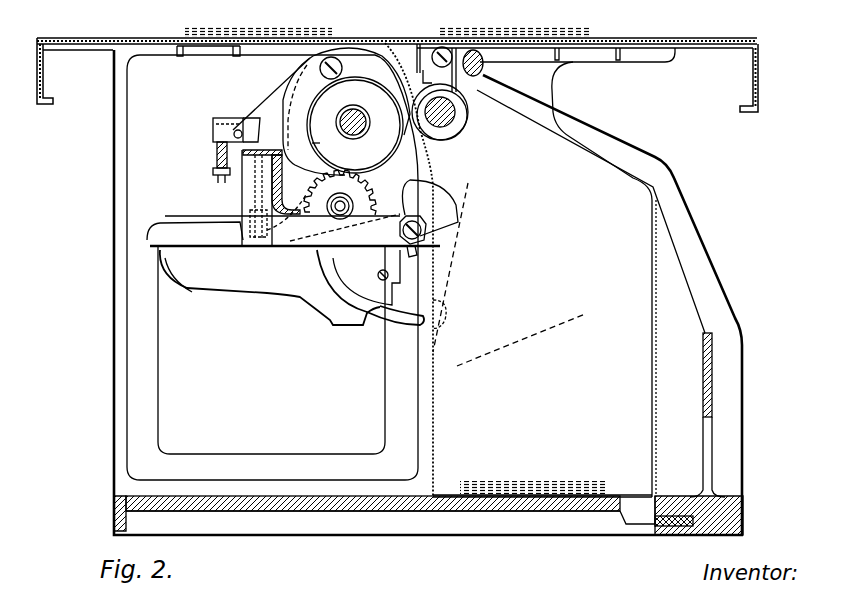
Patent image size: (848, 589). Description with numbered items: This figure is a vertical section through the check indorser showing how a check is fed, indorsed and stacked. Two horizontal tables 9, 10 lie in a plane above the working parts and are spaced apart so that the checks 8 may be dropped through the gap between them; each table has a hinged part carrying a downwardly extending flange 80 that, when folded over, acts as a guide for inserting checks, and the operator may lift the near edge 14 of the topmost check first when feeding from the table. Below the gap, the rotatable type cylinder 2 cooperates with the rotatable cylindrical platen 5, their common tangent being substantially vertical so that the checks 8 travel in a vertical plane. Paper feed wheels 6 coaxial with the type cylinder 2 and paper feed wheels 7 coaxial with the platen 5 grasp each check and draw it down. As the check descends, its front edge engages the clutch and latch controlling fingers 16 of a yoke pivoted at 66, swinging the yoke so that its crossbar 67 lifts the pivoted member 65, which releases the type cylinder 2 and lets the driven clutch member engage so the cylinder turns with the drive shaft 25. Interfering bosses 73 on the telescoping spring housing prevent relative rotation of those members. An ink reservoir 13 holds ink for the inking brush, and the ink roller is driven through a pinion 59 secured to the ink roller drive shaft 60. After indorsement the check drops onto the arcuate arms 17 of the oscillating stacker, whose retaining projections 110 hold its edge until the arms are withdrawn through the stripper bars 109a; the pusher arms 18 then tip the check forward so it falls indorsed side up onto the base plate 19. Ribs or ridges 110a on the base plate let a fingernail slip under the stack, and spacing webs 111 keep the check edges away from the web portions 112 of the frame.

The type cylinder 2 is at (307, 168).
The cylindrical platen 5 is at (466, 128).
The paper feed wheels 6 is at (388, 95).
The paper feed wheels 7 is at (470, 114).
The checks 8 is at (237, 27).
The table 9 is at (82, 38).
The table 10 is at (650, 44).
The reservoir 13 is at (267, 283).
The near edge 14 is at (187, 13).
The clutch and latch controlling fingers 16 is at (355, 125).
The arcuate arms 17 is at (378, 327).
The pusher arms 18 is at (458, 218).
The base plate 19 is at (543, 513).
The drive shaft 25 is at (364, 125).
The pinion 59 is at (308, 235).
The ink roller drive shaft 60 is at (340, 214).
The pivoted member 65 is at (237, 118).
The pivot 66 is at (336, 57).
The crossbar 67 is at (292, 191).
The interfering bosses 73 is at (417, 251).
The flange 80 is at (42, 84).
The stripper bars 109a is at (432, 352).
The retaining projections 110 is at (417, 317).
The ribs or ridges 110a is at (618, 497).
The spacing webs 111 is at (665, 345).
The web portions 112 is at (713, 362).